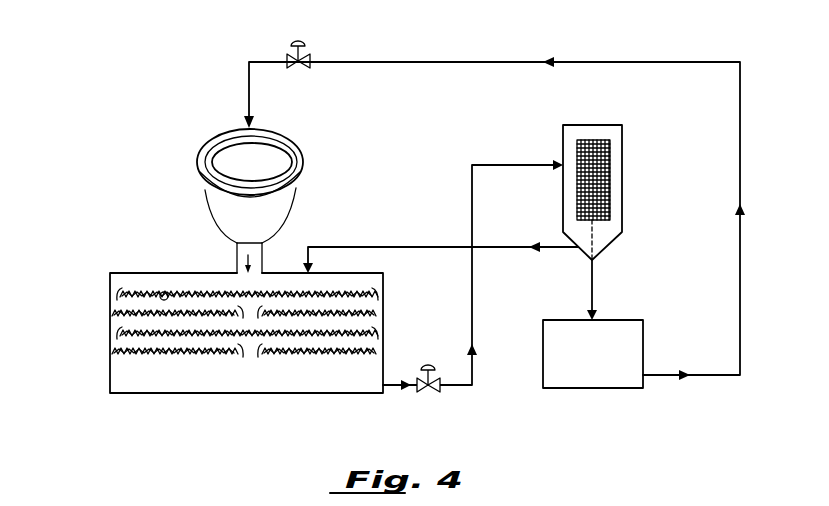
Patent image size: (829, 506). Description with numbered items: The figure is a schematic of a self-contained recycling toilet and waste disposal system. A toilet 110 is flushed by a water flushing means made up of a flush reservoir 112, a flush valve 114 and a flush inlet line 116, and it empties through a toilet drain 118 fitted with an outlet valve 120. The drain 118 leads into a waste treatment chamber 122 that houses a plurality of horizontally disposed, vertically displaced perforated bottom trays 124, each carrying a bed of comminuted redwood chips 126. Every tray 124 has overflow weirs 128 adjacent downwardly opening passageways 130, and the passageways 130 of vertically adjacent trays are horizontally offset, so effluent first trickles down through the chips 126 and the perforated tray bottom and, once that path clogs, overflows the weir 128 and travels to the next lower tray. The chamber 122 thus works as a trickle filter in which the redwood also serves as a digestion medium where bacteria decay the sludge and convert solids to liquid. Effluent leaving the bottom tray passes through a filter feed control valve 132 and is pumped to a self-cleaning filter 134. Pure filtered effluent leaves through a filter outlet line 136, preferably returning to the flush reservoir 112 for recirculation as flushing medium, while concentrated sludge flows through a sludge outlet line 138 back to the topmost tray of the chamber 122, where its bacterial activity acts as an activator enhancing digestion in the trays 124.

The toilet 110 is at (212, 148).
The flush reservoir 112 is at (616, 376).
The flush valve 114 is at (311, 58).
The flush inlet line 116 is at (458, 60).
The toilet drain 118 is at (232, 262).
The outlet valve 120 is at (264, 245).
The waste treatment chamber 122 is at (138, 395).
The perforated bottom tray 124 is at (330, 358).
The redwood chips 126 is at (190, 312).
The overflow weir 128 is at (362, 352).
The downwardly opening passageway 130 is at (384, 332).
The filter feed control valve 132 is at (432, 395).
The self-cleaning filter 134 is at (607, 131).
The filter outlet line 136 is at (596, 283).
The sludge outlet line 138 is at (514, 250).